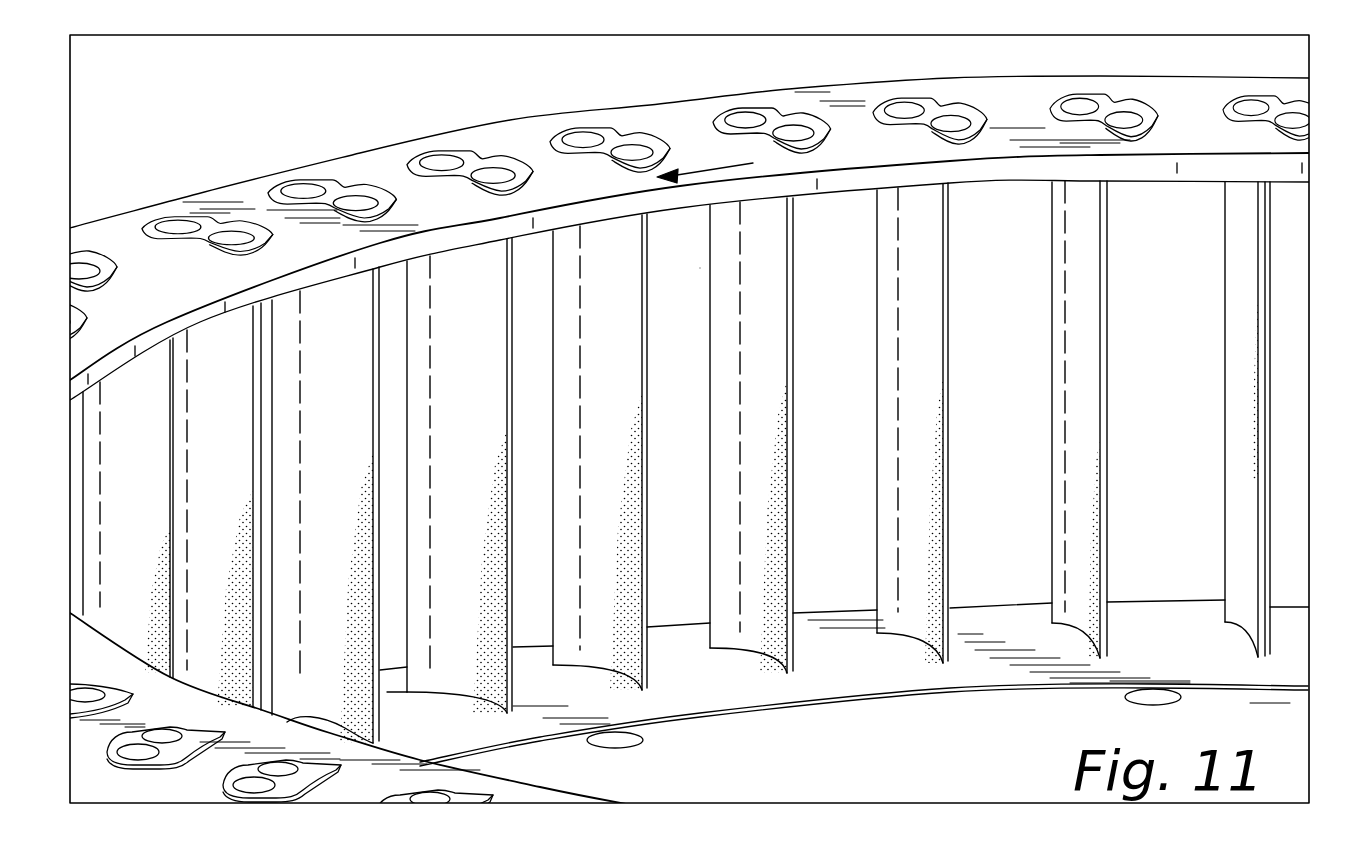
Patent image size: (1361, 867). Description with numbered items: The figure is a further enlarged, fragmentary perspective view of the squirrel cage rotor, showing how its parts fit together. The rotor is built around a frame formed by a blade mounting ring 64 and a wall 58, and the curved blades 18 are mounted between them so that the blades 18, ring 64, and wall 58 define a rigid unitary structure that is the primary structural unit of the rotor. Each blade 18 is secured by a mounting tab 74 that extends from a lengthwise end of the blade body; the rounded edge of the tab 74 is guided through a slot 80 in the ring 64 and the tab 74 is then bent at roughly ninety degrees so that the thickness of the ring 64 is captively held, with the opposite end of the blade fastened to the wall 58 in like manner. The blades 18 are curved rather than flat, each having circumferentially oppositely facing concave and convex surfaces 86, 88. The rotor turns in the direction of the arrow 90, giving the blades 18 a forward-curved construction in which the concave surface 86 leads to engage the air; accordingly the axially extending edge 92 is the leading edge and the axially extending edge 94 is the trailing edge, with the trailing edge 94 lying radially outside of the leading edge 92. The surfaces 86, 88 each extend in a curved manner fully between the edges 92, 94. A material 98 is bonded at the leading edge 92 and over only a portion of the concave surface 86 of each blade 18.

The blades 18 is at (768, 610).
The wall 58 is at (812, 739).
The blade mounting ring 64 is at (410, 213).
The mounting tab 74 is at (782, 120).
The slot 80 is at (210, 240).
The concave surface 86 is at (620, 627).
The convex surface 88 is at (1272, 398).
The arrow 90 is at (719, 168).
The leading edge 92 is at (790, 540).
The trailing edge 94 is at (710, 447).
The bonded material 98 is at (793, 423).